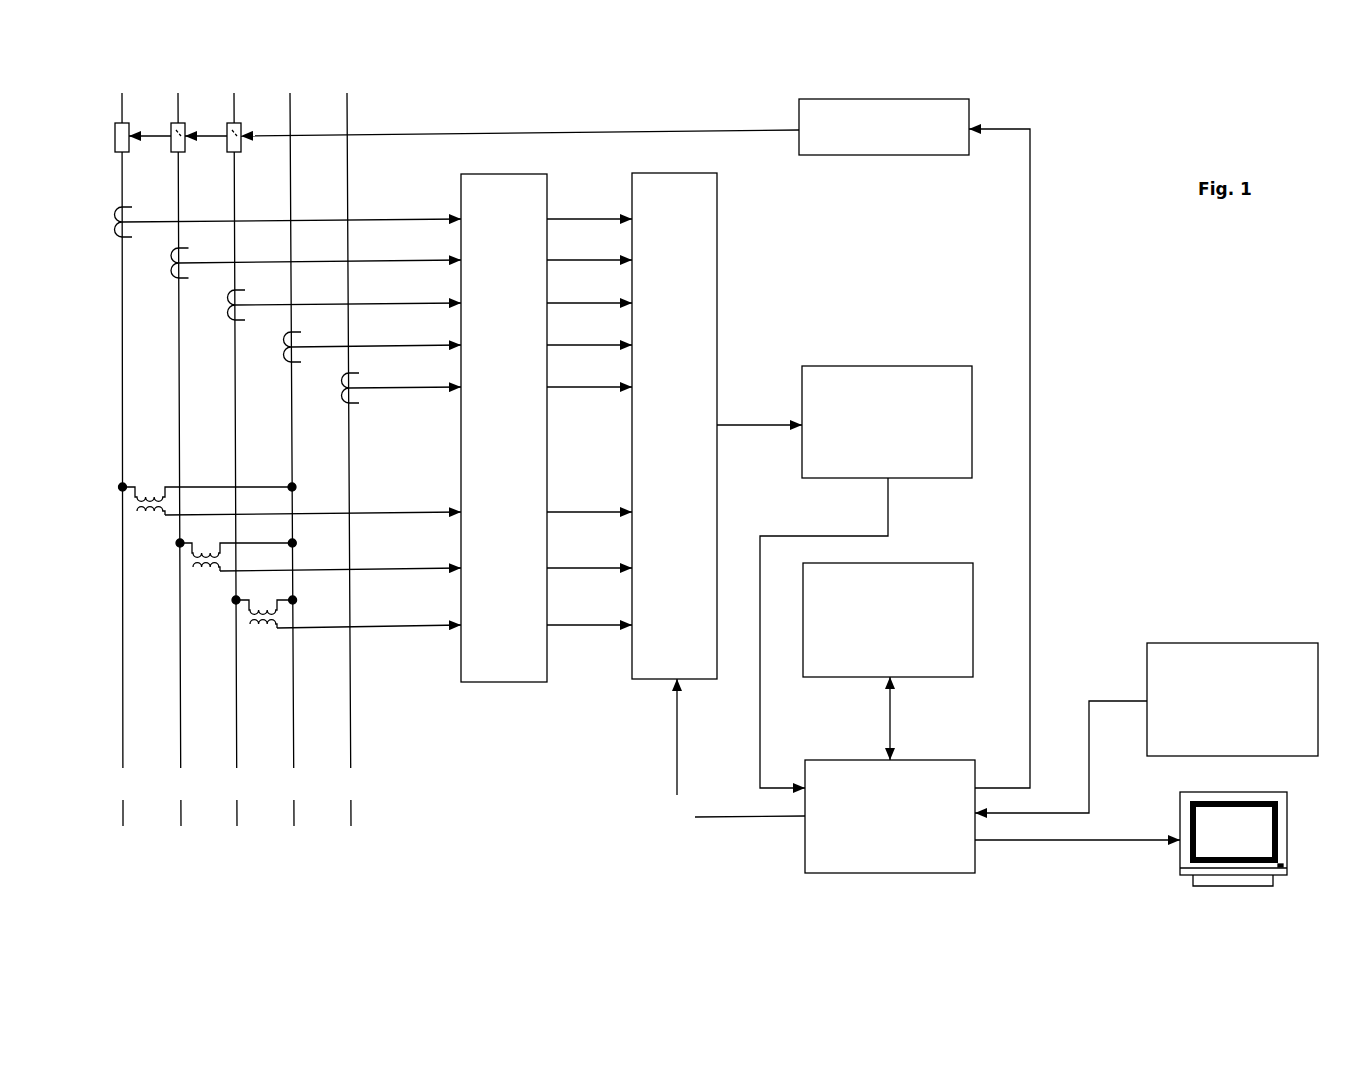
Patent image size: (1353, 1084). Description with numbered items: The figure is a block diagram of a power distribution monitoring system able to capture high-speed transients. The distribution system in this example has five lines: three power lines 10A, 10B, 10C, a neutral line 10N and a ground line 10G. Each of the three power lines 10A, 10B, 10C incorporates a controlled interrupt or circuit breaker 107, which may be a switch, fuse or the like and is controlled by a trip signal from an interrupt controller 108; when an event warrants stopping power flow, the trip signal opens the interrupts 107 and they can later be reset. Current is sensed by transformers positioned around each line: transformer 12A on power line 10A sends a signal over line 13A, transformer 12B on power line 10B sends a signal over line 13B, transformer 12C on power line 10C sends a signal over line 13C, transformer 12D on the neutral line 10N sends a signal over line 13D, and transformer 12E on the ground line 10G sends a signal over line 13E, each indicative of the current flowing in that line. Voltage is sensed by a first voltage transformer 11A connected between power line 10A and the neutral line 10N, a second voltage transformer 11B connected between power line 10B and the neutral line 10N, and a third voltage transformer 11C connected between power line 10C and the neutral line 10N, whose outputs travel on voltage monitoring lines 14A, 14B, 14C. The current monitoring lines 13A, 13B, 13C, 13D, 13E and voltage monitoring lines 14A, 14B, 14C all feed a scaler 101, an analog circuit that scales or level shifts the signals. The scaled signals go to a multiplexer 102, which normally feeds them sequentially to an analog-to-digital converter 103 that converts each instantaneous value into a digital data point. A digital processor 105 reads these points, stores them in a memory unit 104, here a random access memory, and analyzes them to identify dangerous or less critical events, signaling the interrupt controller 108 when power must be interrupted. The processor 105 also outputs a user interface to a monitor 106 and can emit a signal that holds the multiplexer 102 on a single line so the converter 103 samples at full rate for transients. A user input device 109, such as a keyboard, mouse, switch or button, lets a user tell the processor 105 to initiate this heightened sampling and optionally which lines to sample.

The first power line 10A is at (122, 459).
The second power line 10B is at (180, 459).
The third power line 10C is at (237, 459).
The neutral line 10N is at (294, 459).
The ground line 10G is at (351, 459).
The interrupt 107 is at (235, 130).
The transformer 12A is at (102, 222).
The transformer 12B is at (158, 263).
The transformer 12C is at (215, 305).
The transformer 12D is at (271, 347).
The transformer 12E is at (329, 388).
The line 13A is at (377, 209).
The line 13B is at (406, 250).
The line 13C is at (433, 293).
The line 13D is at (461, 335).
The line 13E is at (490, 376).
The first voltage transformer 11A is at (208, 515).
The second voltage transformer 11B is at (236, 570).
The third voltage transformer 11C is at (264, 627).
The voltage monitoring line 14A is at (398, 502).
The voltage monitoring line 14B is at (426, 558).
The voltage monitoring line 14C is at (454, 615).
The scaler 101 is at (504, 428).
The multiplexer 102 is at (674, 426).
The analog-to-digital converter 103 is at (844, 577).
The memory unit 104 is at (888, 661).
The digital processor 105 is at (890, 816).
The monitor 106 is at (1131, 850).
The interrupt controller 108 is at (914, 443).
The user input device 109 is at (1146, 728).